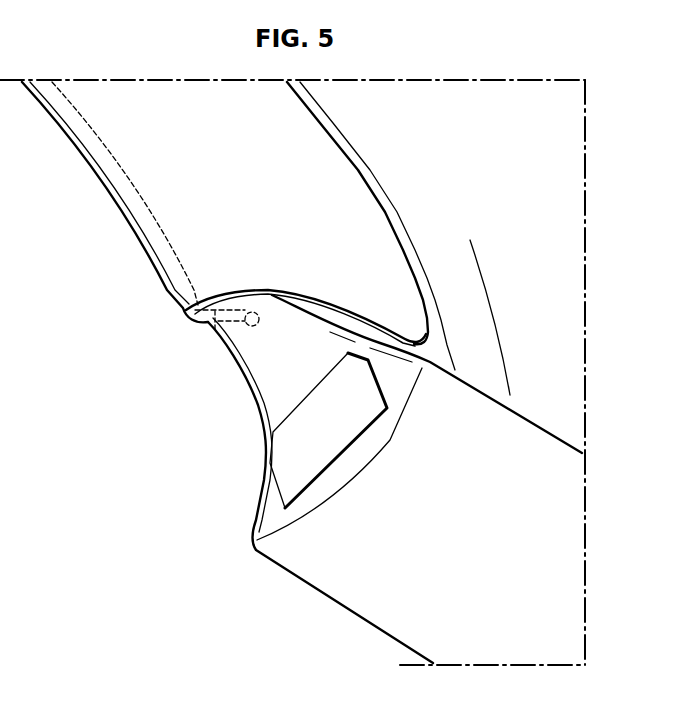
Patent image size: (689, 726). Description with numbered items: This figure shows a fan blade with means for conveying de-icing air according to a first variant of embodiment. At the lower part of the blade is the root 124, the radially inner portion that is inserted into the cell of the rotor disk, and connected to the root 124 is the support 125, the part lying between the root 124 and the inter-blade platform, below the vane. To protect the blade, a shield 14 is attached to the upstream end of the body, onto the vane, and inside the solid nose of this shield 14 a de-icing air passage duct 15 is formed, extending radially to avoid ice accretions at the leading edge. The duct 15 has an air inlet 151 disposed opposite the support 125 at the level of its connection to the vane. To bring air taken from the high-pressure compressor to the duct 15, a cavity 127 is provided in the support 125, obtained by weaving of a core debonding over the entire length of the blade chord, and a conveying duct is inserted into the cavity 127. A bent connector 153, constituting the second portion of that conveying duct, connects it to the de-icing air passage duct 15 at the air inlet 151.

The shield 14 is at (253, 173).
The de-icing air passage duct 15 is at (120, 194).
The root 124 is at (502, 503).
The support 125 is at (303, 365).
The cavity 127 is at (212, 328).
The air inlet 151 is at (195, 324).
The bent connector 153 is at (218, 325).